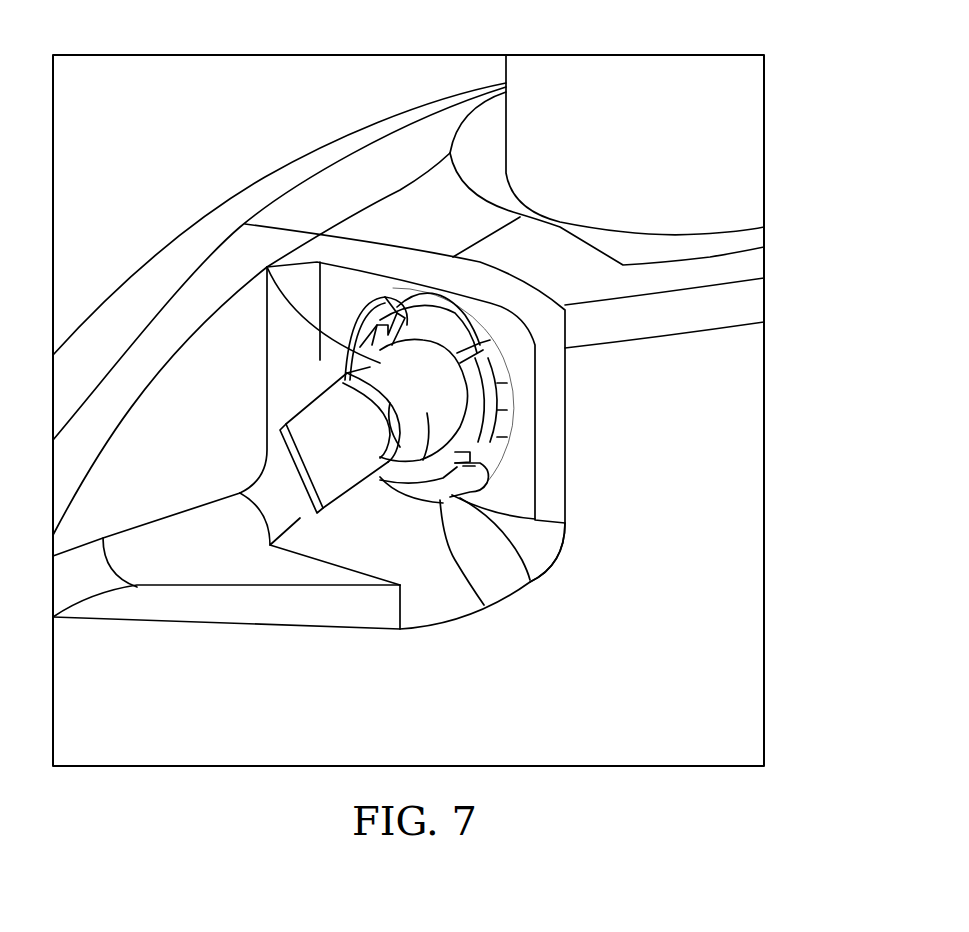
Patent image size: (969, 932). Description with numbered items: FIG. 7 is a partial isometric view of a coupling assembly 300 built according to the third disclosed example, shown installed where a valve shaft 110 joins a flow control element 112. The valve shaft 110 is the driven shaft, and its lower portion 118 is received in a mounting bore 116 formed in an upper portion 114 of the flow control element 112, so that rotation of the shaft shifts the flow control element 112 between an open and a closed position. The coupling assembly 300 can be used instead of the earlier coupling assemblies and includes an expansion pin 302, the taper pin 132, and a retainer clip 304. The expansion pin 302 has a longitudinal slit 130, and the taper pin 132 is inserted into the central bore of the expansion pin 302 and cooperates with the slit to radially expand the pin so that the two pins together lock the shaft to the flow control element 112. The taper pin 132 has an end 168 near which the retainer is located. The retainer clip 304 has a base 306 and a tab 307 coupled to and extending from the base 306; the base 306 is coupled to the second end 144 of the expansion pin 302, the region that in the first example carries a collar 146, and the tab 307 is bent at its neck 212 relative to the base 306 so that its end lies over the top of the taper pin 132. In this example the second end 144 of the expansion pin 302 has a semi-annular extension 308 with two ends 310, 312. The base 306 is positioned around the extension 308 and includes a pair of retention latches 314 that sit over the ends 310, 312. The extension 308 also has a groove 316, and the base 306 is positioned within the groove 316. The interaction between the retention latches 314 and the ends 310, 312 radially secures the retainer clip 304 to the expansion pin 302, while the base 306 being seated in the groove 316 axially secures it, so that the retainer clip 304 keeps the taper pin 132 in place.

The valve shaft 110 is at (533, 77).
The flow control element 112 is at (175, 257).
The upper portion of the flow control element 114 is at (252, 196).
The mounting bore 116 is at (750, 228).
The lower portion of the valve shaft 118 is at (740, 128).
The longitudinal slit 130 is at (527, 297).
The taper pin 132 is at (455, 410).
The second end of the expansion pin 144 is at (497, 383).
The collar 146 is at (497, 410).
The end of the taper pin 168 is at (267, 267).
The neck 212 is at (345, 550).
The coupling assembly 300 is at (257, 406).
The expansion pin 302 is at (450, 323).
The retainer clip 304 is at (537, 520).
The base 306 is at (548, 578).
The tab 307 is at (280, 483).
The semi-annular extension 308 is at (362, 330).
The end of the semi-annular extension 310 is at (388, 310).
The end of the semi-annular extension 312 is at (497, 437).
The retention latches 314 is at (375, 312).
The groove 316 is at (484, 605).